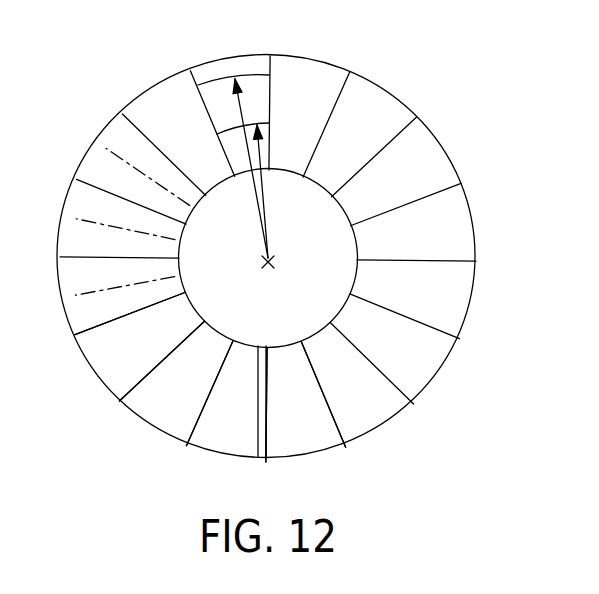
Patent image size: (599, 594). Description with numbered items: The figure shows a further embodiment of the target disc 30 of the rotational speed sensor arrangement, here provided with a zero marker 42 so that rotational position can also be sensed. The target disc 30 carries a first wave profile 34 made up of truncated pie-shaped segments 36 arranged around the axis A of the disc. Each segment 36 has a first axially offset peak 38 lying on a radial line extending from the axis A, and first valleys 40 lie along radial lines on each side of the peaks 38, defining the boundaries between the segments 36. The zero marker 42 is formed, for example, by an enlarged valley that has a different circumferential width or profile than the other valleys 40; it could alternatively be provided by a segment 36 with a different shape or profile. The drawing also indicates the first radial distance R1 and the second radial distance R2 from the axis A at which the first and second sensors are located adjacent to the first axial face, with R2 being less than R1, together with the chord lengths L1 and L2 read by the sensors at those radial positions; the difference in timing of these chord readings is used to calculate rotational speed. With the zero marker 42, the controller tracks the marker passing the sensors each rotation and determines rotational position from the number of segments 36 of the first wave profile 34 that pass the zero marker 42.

The target disc 30 is at (112, 118).
The first wave profile 34 is at (358, 416).
The segments 36 is at (113, 375).
The first axially offset peak 38 is at (75, 219).
The first valleys 40 is at (85, 178).
The zero marker 42 is at (249, 436).
The axis A is at (283, 263).
The chord length L1 is at (206, 83).
The chord length L2 is at (263, 127).
The first radial distance R1 is at (251, 129).
The second radial distance R2 is at (297, 164).